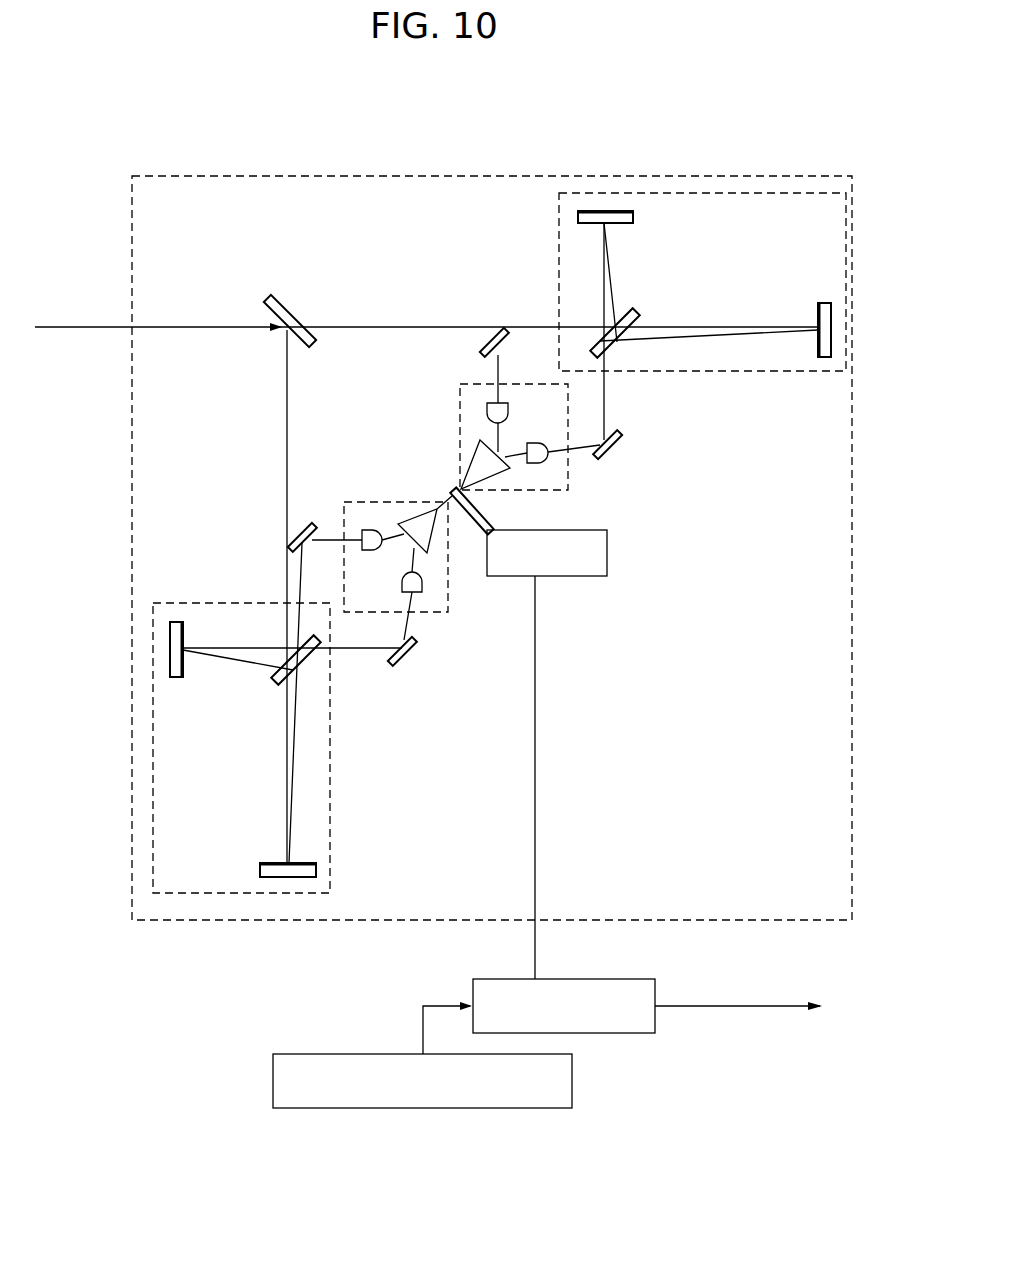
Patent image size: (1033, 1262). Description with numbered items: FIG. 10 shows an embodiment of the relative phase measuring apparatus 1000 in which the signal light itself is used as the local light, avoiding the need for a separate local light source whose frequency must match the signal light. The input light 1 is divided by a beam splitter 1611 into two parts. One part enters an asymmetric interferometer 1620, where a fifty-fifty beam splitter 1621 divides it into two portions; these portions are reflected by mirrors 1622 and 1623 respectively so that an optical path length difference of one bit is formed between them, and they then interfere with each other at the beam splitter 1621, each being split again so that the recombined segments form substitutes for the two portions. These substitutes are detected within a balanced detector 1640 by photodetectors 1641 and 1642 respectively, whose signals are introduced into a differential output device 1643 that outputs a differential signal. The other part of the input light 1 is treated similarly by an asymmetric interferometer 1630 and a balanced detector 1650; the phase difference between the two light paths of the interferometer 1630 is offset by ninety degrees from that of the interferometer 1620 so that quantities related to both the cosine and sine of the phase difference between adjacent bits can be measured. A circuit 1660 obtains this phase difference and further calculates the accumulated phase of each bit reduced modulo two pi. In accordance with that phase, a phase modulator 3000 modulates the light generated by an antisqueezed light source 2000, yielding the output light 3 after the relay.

The input light 1 is at (73, 330).
The output light 3 is at (727, 1006).
The relative phase measuring apparatus 1000 is at (458, 176).
The beam splitter 1611 is at (294, 300).
The asymmetric interferometer 1620 is at (697, 371).
The 50:50 beam splitter 1621 is at (632, 310).
The mirror 1622 is at (819, 302).
The mirror 1623 is at (633, 216).
The asymmetric interferometer 1630 is at (330, 800).
The balanced detector 1640 is at (568, 468).
The photodetector 1641 is at (538, 463).
The photodetector 1642 is at (486, 412).
The differential output device 1643 is at (478, 463).
The balanced detector 1650 is at (425, 613).
The circuit 1660 is at (607, 565).
The antisqueezed light source 2000 is at (273, 1082).
The phase modulator 3000 is at (608, 979).